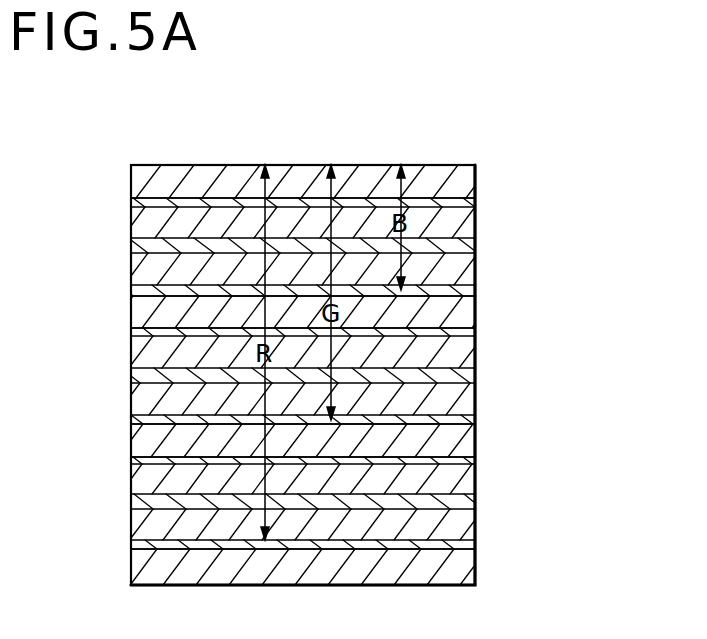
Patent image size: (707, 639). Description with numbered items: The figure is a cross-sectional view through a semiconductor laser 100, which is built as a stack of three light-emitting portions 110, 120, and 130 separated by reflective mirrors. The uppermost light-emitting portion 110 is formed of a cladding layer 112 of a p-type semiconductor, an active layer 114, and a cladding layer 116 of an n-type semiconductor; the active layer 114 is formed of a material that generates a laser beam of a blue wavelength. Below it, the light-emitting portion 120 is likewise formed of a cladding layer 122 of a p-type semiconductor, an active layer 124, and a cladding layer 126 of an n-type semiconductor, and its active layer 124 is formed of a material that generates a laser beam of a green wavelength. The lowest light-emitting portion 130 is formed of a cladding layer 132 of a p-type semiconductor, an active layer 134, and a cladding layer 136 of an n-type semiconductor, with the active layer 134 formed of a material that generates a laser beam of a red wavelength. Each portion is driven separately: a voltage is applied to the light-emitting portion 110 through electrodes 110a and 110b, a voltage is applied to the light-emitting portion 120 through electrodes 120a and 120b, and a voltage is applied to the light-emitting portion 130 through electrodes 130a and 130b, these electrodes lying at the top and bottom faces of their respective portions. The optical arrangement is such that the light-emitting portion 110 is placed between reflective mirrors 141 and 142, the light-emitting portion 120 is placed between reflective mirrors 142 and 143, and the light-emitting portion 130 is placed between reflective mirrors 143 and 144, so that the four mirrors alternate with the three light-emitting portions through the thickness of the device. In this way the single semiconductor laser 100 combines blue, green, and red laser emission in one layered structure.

The semiconductor laser 100 is at (337, 142).
The light-emitting portion 110 is at (577, 189).
The electrode 110a is at (475, 203).
The electrode 110b is at (475, 290).
The cladding layer 112 is at (468, 222).
The active layer 114 is at (475, 248).
The cladding layer 116 is at (468, 270).
The light-emitting portion 120 is at (577, 340).
The electrode 120a is at (475, 333).
The electrode 120b is at (475, 420).
The cladding layer 122 is at (475, 348).
The active layer 124 is at (475, 375).
The cladding layer 126 is at (475, 398).
The light-emitting portion 130 is at (573, 465).
The electrode 130a is at (475, 462).
The electrode 130b is at (475, 545).
The cladding layer 132 is at (475, 472).
The active layer 134 is at (475, 500).
The cladding layer 136 is at (475, 520).
The reflective mirror 141 is at (131, 183).
The reflective mirror 142 is at (135, 310).
The reflective mirror 143 is at (133, 436).
The reflective mirror 144 is at (133, 560).